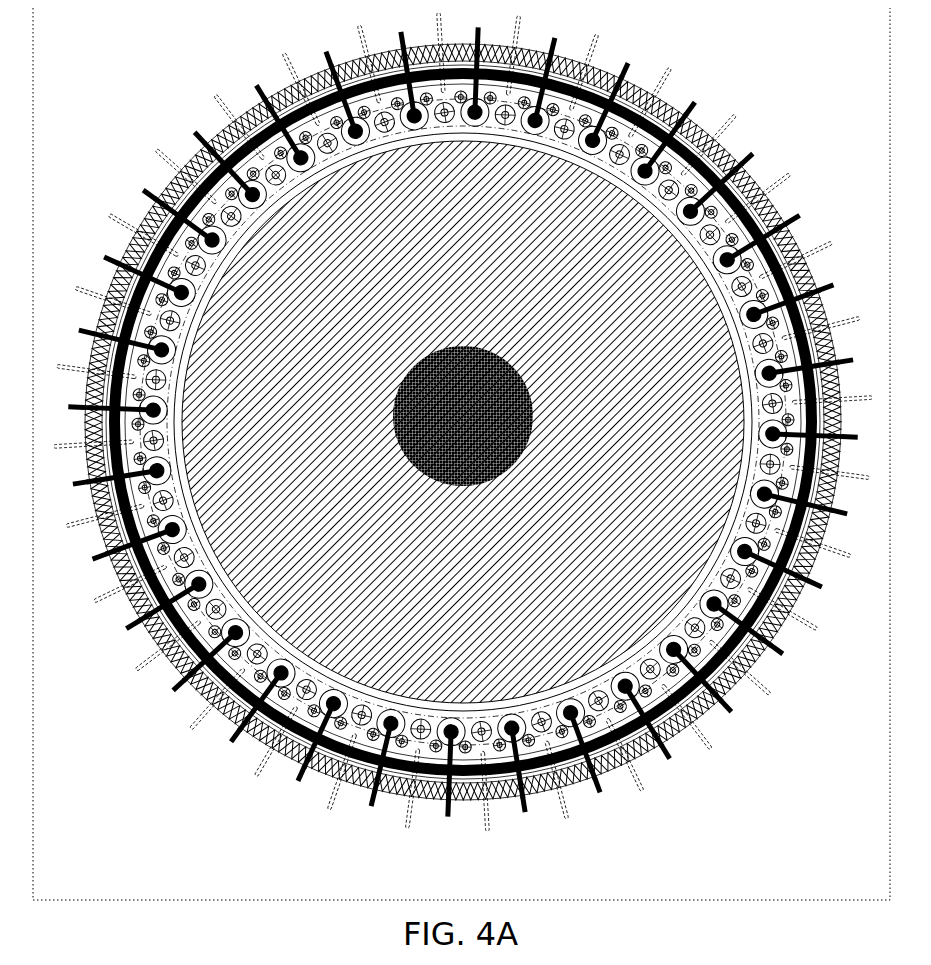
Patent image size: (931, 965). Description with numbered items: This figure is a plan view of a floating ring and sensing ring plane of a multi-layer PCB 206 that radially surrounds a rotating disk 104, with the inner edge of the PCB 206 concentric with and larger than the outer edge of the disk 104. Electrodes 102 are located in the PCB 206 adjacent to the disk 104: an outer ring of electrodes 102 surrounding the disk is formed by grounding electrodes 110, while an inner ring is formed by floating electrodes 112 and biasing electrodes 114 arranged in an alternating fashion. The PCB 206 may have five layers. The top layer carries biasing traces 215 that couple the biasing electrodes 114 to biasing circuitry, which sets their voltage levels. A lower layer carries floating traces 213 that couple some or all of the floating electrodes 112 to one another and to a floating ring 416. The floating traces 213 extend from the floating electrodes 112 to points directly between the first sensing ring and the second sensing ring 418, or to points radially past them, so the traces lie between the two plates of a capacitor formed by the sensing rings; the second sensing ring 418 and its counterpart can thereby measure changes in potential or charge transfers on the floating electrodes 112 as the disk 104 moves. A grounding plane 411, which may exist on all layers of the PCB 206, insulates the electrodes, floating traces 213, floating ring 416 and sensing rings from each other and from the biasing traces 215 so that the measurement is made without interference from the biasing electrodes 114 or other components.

The PCB 206 is at (805, 38).
The rotating disk 104 is at (328, 200).
The electrodes 102 is at (170, 212).
The grounding plane 411 is at (765, 625).
The floating electrodes 112 is at (278, 682).
The floating traces 213 is at (367, 797).
The floating ring 416 is at (612, 690).
The second sensing ring 418 is at (657, 672).
The biasing electrodes 114 is at (297, 698).
The grounding electrodes 110 is at (253, 670).
The biasing traces 215 is at (478, 805).